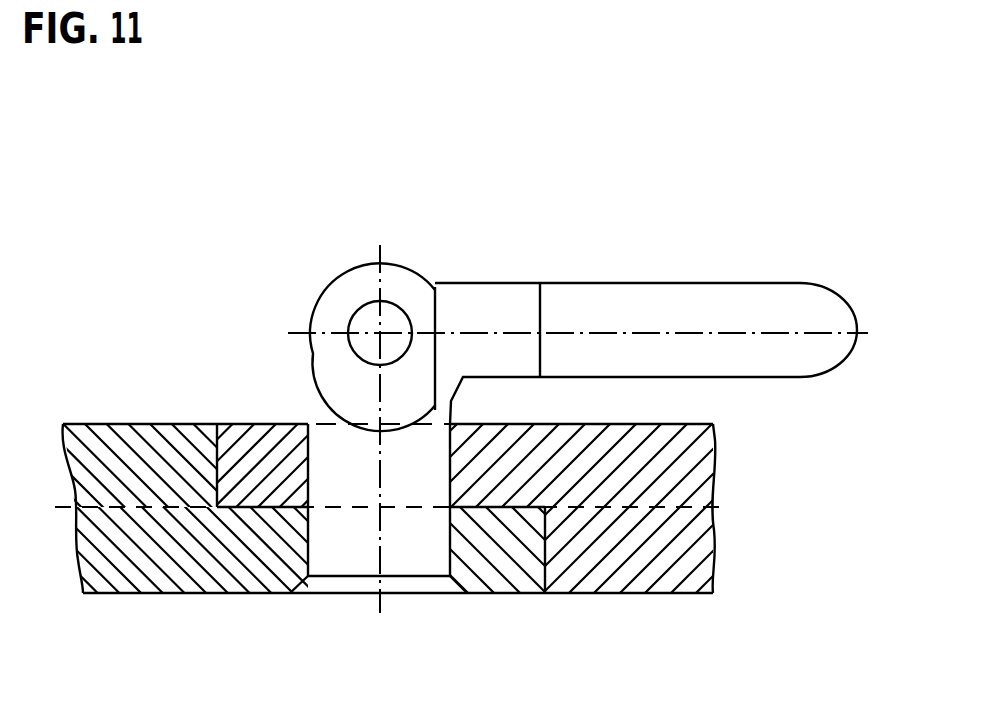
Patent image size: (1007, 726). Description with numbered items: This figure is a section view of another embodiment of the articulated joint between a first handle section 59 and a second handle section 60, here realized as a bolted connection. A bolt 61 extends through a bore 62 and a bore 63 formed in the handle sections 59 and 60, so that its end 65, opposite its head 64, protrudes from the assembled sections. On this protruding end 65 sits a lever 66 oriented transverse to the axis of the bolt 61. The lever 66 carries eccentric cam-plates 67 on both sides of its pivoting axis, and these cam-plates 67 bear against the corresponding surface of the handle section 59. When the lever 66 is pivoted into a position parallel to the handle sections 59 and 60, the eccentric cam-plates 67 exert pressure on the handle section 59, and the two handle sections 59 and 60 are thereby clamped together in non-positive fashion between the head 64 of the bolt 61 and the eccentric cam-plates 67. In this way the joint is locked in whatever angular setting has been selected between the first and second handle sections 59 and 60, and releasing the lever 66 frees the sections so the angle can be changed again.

The first handle section 59 is at (673, 593).
The second handle section 60 is at (143, 424).
The bolt 61 is at (358, 543).
The bore 62 is at (268, 402).
The bore 63 is at (418, 530).
The head 64 is at (413, 583).
The end 65 is at (320, 395).
The lever 66 is at (618, 279).
The eccentric cam-plates 67 is at (386, 420).